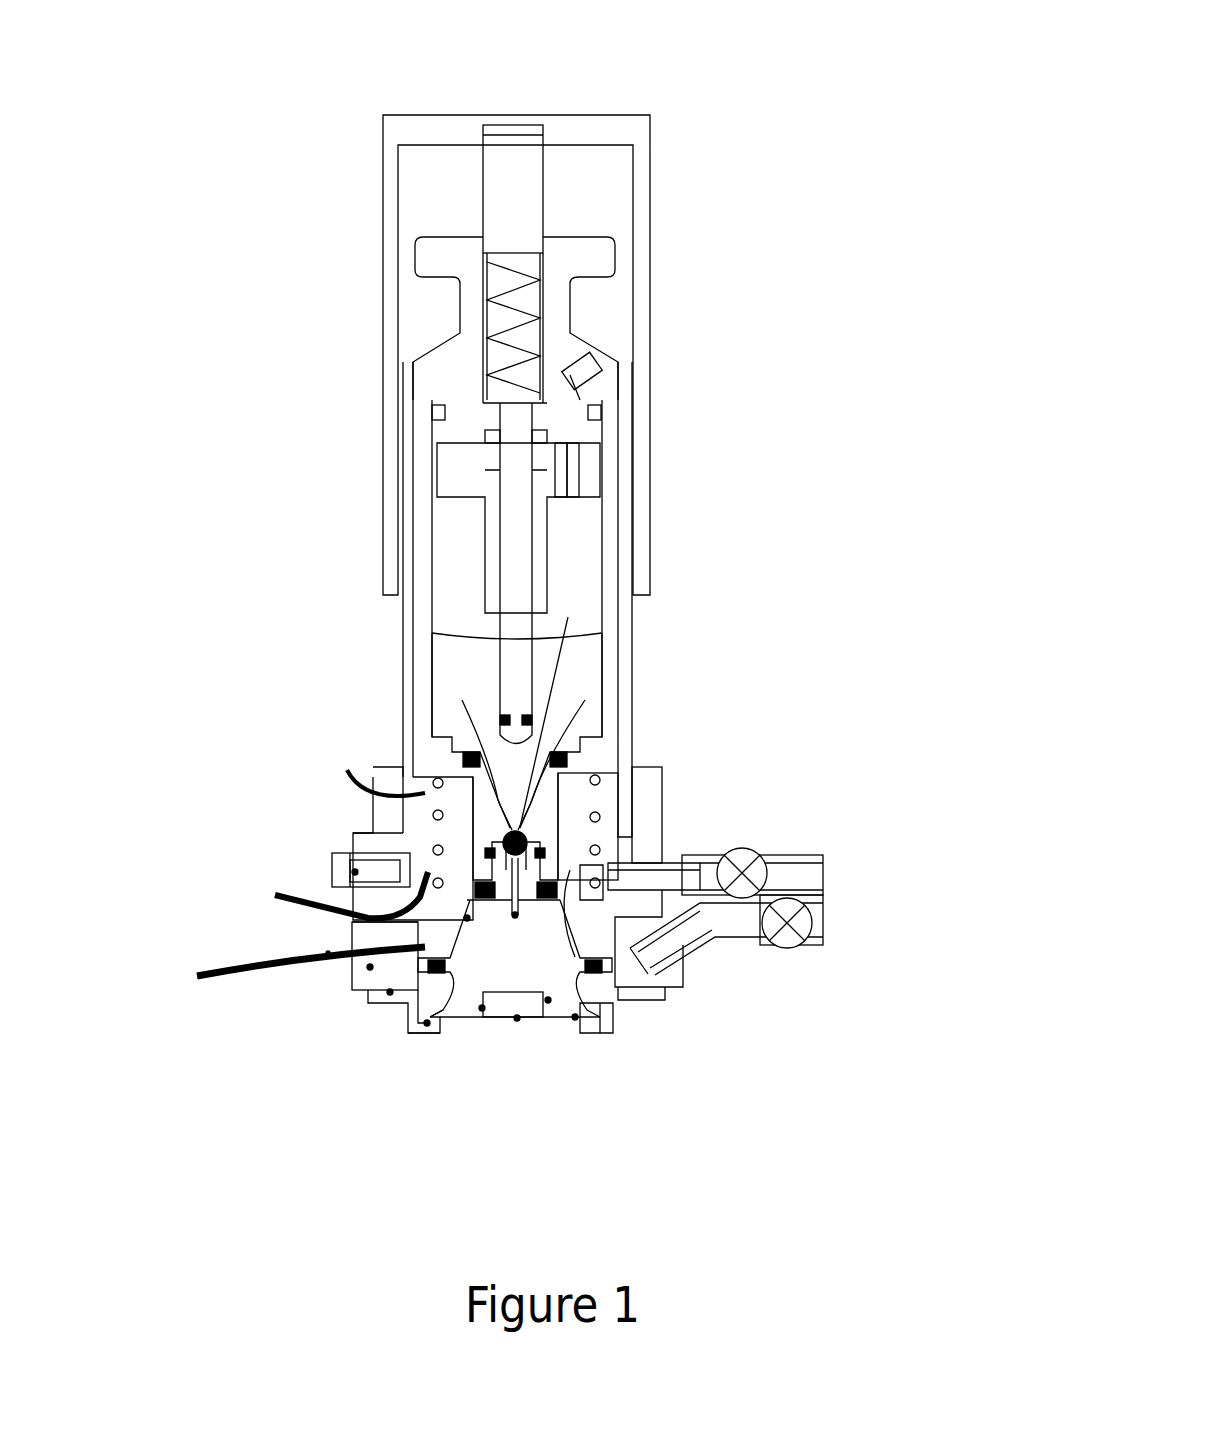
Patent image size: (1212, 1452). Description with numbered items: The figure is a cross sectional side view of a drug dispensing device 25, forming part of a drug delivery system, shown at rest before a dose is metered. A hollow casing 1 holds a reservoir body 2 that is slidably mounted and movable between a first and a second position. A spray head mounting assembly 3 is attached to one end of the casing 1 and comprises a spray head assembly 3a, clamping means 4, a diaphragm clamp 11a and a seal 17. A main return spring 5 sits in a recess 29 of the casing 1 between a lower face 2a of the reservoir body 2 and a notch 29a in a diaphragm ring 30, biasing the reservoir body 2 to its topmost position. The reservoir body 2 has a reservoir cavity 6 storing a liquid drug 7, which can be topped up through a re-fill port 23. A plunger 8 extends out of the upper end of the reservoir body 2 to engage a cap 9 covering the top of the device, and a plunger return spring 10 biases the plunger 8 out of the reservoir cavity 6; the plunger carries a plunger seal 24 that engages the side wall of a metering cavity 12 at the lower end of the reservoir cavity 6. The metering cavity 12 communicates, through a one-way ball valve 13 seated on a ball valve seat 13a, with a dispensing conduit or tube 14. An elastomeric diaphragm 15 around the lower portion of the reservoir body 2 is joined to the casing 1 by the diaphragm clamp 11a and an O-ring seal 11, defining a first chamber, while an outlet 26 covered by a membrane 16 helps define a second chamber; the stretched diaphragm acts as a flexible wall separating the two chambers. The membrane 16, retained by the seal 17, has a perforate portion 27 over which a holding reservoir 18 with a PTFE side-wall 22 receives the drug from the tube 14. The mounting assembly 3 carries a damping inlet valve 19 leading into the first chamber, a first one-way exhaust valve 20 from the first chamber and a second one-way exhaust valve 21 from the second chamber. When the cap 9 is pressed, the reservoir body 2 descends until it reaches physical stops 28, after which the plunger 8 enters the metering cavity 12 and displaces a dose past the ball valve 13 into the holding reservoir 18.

The casing 1 is at (627, 633).
The reservoir body 2 is at (597, 715).
The lower face of the reservoir body 2a is at (360, 784).
The spray head mounting assembly 3 is at (705, 1006).
The spray head assembly 3a is at (583, 1035).
The clamping means 4 is at (370, 967).
The main return spring 5 is at (595, 850).
The reservoir cavity 6 is at (455, 540).
The liquid drug 7 is at (498, 713).
The plunger 8 is at (520, 185).
The cap 9 is at (625, 127).
The plunger return spring 10 is at (513, 313).
The seal 11 is at (435, 966).
The diaphragm clamp 11a is at (390, 992).
The metering cavity 12 is at (512, 802).
The one-way ball valve 13 is at (568, 617).
The ball valve seat 13a is at (525, 835).
The dispensing conduit or tube 14 is at (515, 915).
The elastomeric diaphragm 15 is at (467, 918).
The membrane 16 is at (575, 1017).
The seal 17 is at (427, 1023).
The holding reservoir 18 is at (625, 1032).
The damping inlet valve 19 is at (335, 853).
The first one-way exhaust valve 20 is at (742, 856).
The second one-way exhaust valve 21 is at (798, 922).
The side-wall of the holding reservoir 22 is at (482, 1008).
The re-fill port 23 is at (580, 360).
The plunger seal 24 is at (470, 677).
The drug dispensing device 25 is at (320, 177).
The outlet 26 is at (445, 1035).
The perforate portion 27 is at (517, 1018).
The physical stops 28 is at (425, 885).
The recess 29 is at (325, 893).
The notch 29a is at (328, 953).
The diaphragm ring 30 is at (286, 963).